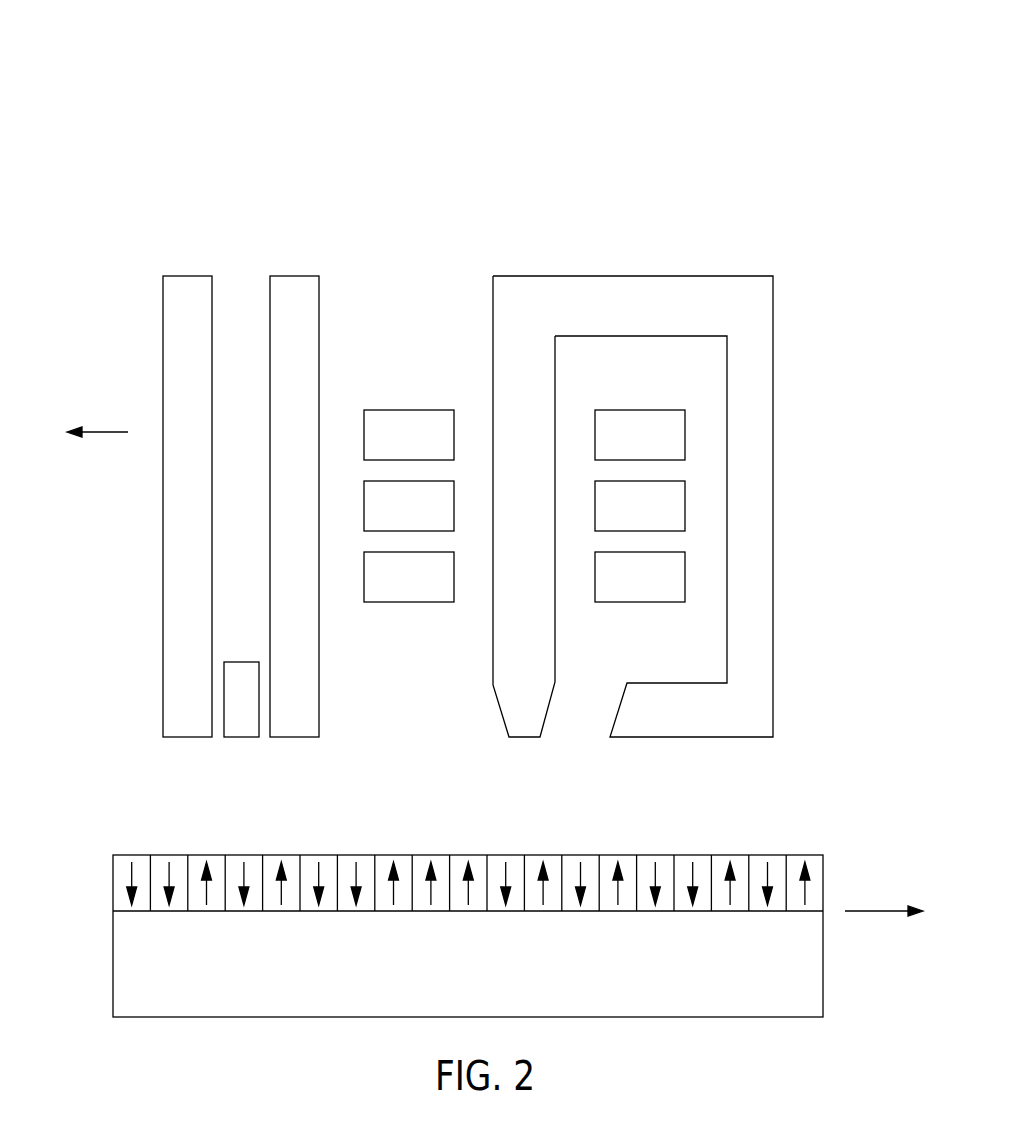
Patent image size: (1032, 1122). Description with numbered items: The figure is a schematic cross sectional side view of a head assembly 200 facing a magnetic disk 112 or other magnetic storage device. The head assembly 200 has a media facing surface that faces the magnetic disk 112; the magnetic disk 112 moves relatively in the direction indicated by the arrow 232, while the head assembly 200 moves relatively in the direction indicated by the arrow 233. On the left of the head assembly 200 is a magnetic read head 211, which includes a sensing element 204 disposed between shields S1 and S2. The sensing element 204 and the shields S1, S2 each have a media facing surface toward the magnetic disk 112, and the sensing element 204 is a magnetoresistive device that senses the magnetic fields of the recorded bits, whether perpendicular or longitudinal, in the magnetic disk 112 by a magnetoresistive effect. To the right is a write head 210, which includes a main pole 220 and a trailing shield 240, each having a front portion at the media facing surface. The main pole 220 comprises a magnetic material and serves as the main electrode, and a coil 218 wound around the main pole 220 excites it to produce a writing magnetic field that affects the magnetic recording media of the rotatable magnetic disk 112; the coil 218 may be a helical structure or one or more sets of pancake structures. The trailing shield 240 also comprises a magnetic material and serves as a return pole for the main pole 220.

The head assembly 200 is at (174, 100).
The magnetic read head 211 is at (325, 226).
The shield S1 is at (205, 643).
The shield S2 is at (313, 643).
The sensing element 204 is at (240, 737).
The write head 210 is at (333, 226).
The coil 218 is at (389, 448).
The main pole 220 is at (503, 665).
The trailing shield 240 is at (758, 722).
The arrow 233 is at (108, 432).
The arrow 232 is at (877, 911).
The magnetic disk 112 is at (97, 855).